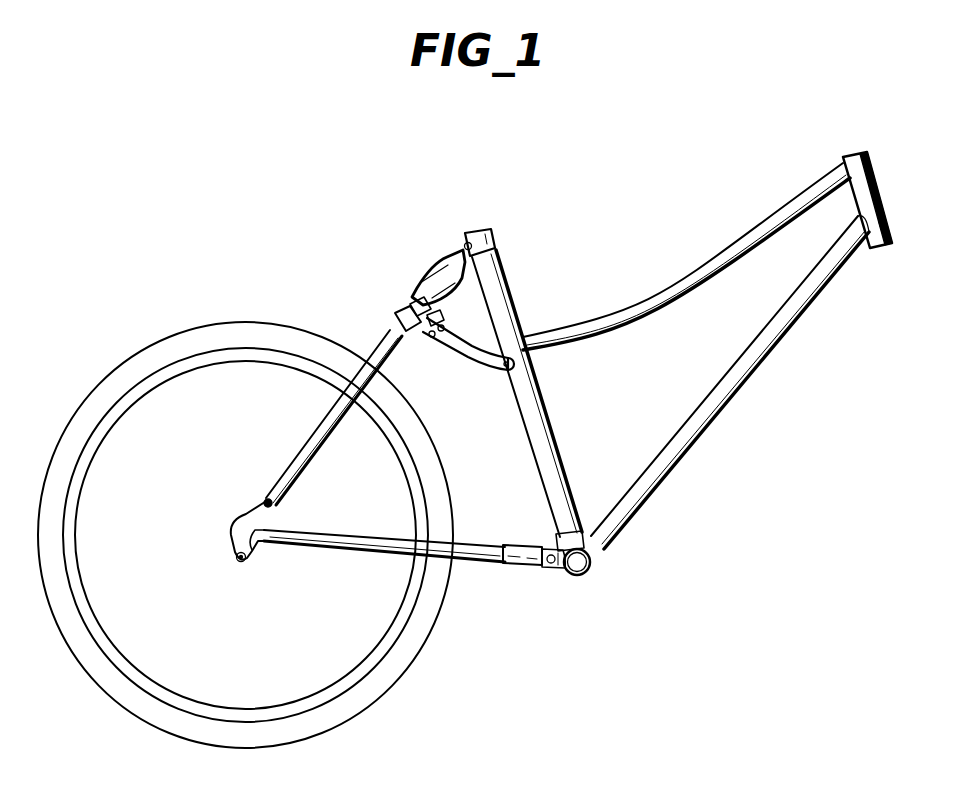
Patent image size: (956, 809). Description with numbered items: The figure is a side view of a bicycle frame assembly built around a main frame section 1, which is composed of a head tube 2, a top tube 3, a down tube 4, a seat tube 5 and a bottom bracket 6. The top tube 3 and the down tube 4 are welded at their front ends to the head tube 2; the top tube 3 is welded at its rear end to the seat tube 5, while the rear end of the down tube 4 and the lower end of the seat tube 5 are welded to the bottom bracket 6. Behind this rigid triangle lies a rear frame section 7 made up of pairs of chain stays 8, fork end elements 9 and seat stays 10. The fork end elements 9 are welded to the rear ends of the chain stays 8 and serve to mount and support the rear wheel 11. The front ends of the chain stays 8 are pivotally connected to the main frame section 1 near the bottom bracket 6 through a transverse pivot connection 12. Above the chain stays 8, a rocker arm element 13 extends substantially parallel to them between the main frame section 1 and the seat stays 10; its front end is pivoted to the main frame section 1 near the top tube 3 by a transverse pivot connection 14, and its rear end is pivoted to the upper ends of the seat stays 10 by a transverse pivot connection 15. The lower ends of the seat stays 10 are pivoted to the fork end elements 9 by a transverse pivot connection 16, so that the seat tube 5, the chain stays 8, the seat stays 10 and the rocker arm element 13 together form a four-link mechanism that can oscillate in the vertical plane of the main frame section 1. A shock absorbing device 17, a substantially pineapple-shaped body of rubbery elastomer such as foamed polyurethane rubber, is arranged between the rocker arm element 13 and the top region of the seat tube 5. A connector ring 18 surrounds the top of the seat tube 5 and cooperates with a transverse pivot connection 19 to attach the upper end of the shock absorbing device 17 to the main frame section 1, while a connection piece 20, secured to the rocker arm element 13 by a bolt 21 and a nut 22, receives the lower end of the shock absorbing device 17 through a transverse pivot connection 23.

The main frame section 1 is at (675, 265).
The head tube 2 is at (877, 189).
The top tube 3 is at (589, 321).
The down tube 4 is at (710, 430).
The seat tube 5 is at (546, 430).
The bottom bracket 6 is at (597, 552).
The rear frame section 7 is at (368, 564).
The chain stays 8 is at (480, 567).
The fork end elements 9 is at (254, 551).
The seat stays 10 is at (312, 440).
The rear wheel 11 is at (148, 358).
The transverse pivot connection 12 is at (553, 575).
The rocker arm element 13 is at (457, 357).
The transverse pivot connection 14 is at (504, 372).
The transverse pivot connection 15 is at (397, 318).
The transverse pivot connection 16 is at (263, 498).
The shock absorbing device 17 is at (438, 262).
The connector ring 18 is at (496, 240).
The transverse pivot connection 19 is at (466, 244).
The connection piece 20 is at (442, 318).
The bolt 21 is at (446, 330).
The nut 22 is at (431, 338).
The transverse pivot connection 23 is at (410, 309).